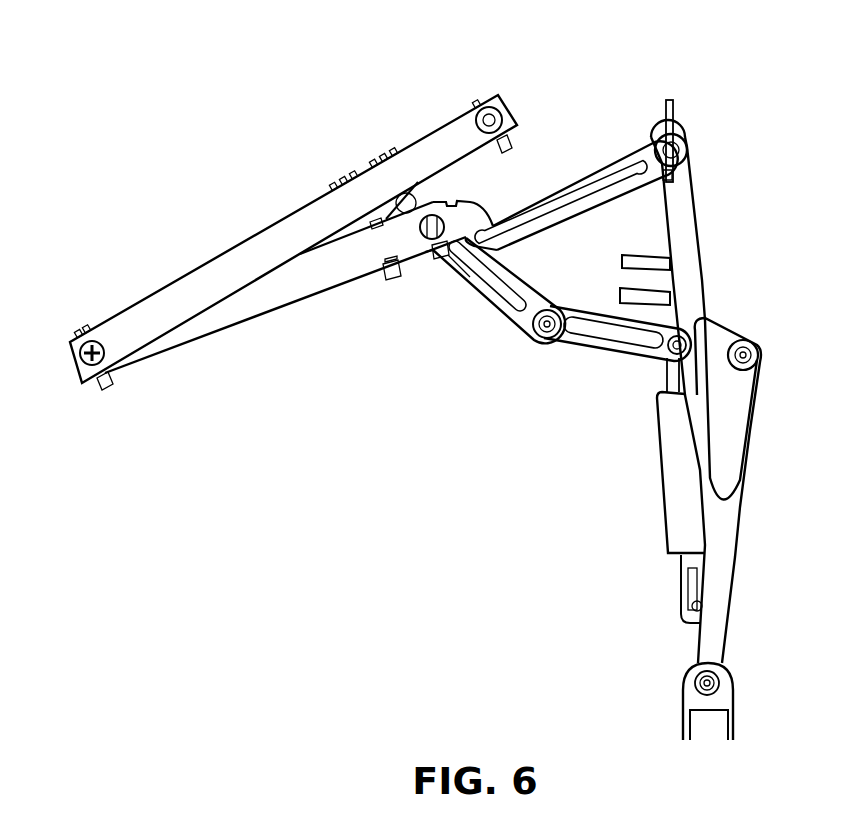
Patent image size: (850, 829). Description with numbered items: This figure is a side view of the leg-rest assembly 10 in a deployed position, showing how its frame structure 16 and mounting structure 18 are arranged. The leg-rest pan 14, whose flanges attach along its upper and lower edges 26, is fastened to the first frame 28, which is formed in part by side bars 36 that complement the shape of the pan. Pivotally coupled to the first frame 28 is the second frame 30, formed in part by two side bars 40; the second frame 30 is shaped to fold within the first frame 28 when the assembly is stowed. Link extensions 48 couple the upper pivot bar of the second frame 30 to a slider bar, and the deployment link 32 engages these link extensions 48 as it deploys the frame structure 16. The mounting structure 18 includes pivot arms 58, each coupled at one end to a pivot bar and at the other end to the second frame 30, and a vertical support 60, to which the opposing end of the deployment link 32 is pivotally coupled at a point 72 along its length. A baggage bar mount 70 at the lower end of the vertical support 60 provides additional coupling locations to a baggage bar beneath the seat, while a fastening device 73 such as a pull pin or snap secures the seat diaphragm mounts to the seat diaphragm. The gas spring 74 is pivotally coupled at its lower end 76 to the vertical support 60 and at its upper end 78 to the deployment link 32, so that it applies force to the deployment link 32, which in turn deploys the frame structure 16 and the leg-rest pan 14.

The leg-rest assembly 10 is at (740, 124).
The leg-rest pan 14 is at (122, 313).
The frame structure 16 is at (430, 148).
The mounting structure 18 is at (680, 206).
The upper and lower edges 26 is at (495, 106).
The first frame 28 is at (345, 185).
The second frame 30 is at (297, 278).
The deployment link 32 is at (505, 290).
The side bars 36 is at (215, 273).
The side bars 40 is at (255, 300).
The link extensions 48 is at (415, 198).
The pivot arms 58 is at (585, 200).
The vertical support 60 is at (727, 433).
The baggage bar mount 70 is at (720, 698).
The point 72 is at (750, 340).
The fastening device 73 is at (673, 104).
The gas spring 74 is at (683, 495).
The lower end 76 is at (683, 605).
The upper end 78 is at (670, 352).